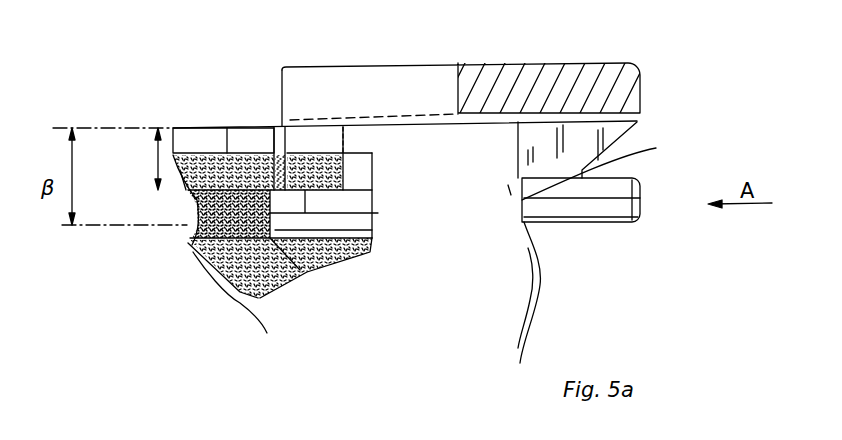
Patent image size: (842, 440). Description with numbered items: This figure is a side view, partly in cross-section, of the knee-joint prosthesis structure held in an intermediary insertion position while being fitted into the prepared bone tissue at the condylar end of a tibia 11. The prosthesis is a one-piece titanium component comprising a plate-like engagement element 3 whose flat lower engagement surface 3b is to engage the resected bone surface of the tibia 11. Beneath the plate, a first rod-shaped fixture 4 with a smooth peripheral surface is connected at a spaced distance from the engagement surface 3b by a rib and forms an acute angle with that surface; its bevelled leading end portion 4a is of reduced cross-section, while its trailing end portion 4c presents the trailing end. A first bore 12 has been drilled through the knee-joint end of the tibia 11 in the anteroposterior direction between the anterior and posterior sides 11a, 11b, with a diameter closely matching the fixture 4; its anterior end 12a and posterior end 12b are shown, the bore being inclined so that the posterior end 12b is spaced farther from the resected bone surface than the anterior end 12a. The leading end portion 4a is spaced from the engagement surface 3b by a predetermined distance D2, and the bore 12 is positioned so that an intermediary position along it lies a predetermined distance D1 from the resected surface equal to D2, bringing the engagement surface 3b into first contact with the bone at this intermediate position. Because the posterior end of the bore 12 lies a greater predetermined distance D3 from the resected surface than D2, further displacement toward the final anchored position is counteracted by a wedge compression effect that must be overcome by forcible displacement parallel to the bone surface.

The plate-like engagement element 3 is at (505, 63).
The engagement surface 3b is at (634, 122).
The first rod-shaped fixture 4 is at (603, 207).
The leading end portion 4a is at (300, 270).
The trailing end portion 4c is at (642, 216).
The tibia 11 is at (420, 309).
The anterior side 11a is at (537, 292).
The posterior side 11b is at (197, 252).
The first bore 12 is at (187, 214).
The anterior end of first bore 12a is at (610, 168).
The posterior end of first bore 12b is at (187, 210).
The predetermined distance D1 is at (262, 127).
The predetermined distance D2 is at (288, 148).
The predetermined distance D3 is at (157, 168).